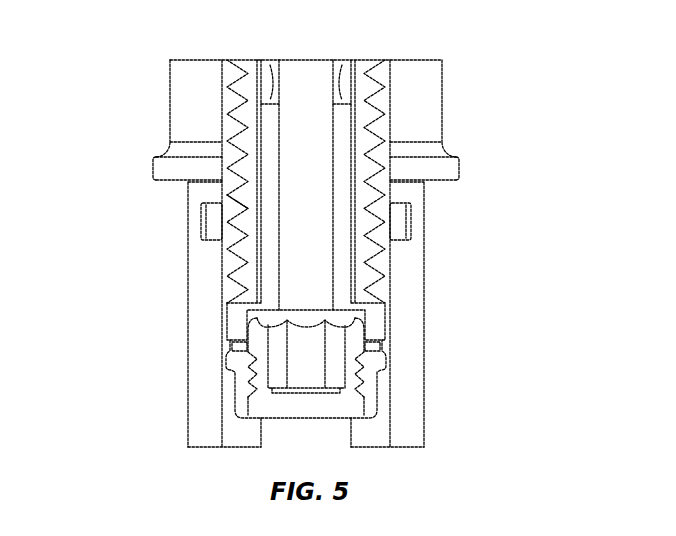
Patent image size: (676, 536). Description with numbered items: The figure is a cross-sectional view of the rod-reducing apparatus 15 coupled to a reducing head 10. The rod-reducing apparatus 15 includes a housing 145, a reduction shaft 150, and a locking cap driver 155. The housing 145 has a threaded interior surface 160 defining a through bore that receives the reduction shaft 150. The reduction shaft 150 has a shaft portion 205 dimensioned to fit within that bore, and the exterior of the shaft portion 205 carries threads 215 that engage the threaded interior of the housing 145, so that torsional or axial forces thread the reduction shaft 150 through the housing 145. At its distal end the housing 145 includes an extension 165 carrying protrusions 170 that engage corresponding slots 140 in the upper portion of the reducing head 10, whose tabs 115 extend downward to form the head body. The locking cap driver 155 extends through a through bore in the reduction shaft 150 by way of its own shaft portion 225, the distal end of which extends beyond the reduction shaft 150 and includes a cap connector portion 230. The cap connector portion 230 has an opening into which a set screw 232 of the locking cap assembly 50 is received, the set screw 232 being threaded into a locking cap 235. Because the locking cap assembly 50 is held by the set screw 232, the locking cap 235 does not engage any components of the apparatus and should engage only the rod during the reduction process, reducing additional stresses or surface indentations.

The reducing head 10 is at (150, 411).
The rod-reducing apparatus 15 is at (106, 156).
The locking cap assembly 50 is at (392, 418).
The tabs 115 is at (188, 318).
The slots 140 is at (202, 230).
The housing 145 is at (443, 108).
The reduction shaft 150 is at (361, 65).
The locking cap driver 155 is at (308, 56).
The thread 160 is at (380, 106).
The extension 165 is at (232, 197).
The protrusions 170 is at (208, 213).
The shaft portion 205 is at (250, 62).
The threads 215 is at (240, 102).
The shaft portion 225 is at (333, 150).
The cap connector portion 230 is at (372, 317).
The set screw 232 is at (347, 338).
The locking cap 235 is at (380, 377).